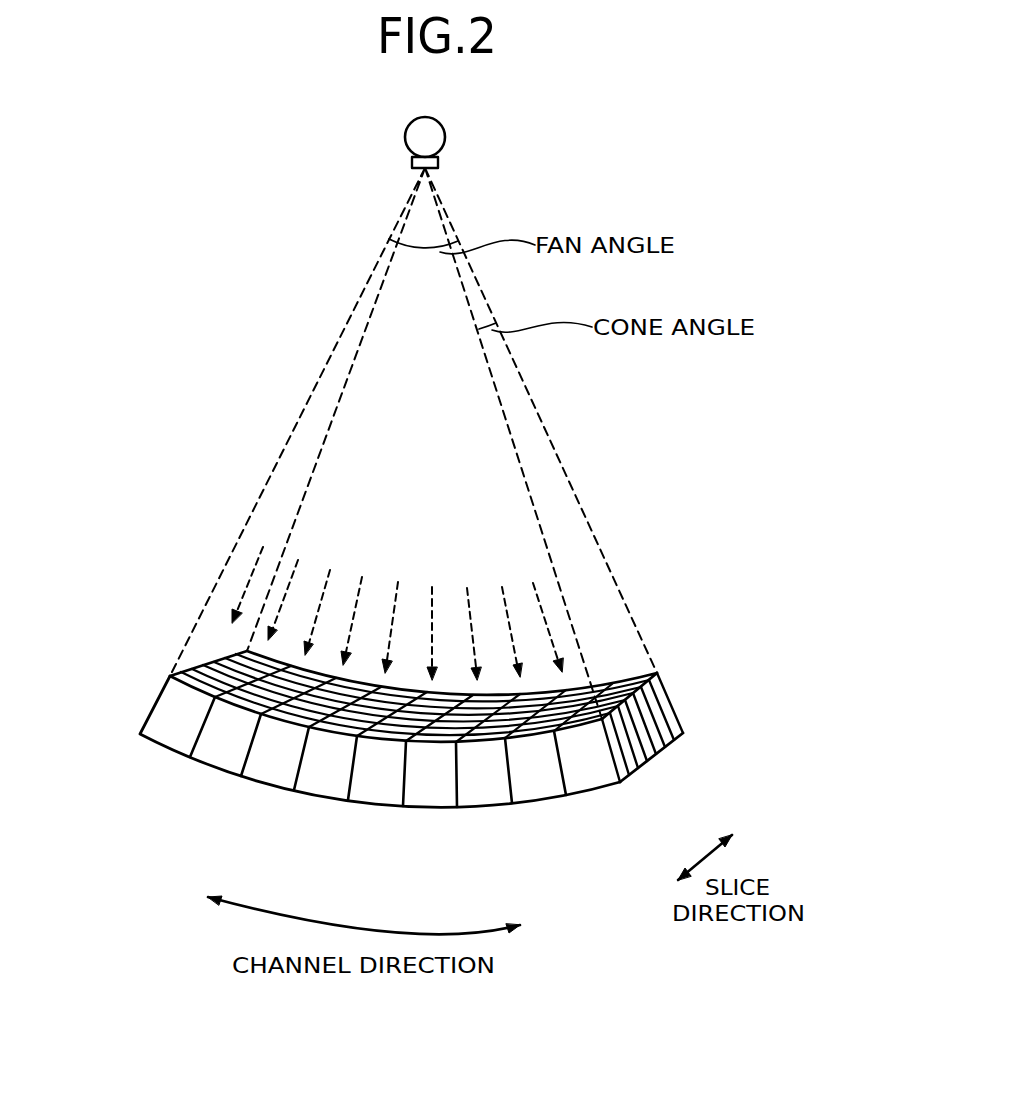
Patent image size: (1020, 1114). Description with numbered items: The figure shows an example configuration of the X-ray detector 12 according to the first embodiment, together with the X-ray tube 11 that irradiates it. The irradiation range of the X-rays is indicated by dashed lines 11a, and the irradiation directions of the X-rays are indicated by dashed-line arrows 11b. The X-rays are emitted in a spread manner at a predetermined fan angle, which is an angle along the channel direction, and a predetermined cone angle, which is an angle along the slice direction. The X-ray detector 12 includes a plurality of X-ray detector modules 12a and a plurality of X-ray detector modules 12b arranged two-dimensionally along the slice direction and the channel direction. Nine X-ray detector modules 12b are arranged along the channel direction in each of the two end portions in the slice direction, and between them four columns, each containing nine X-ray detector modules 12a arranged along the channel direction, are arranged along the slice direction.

The X-ray tube 11 is at (447, 138).
The dashed lines 11a is at (325, 367).
The dashed-line arrows 11b is at (325, 610).
The X-ray detector 12 is at (690, 685).
The X-ray detector modules 12a is at (633, 757).
The X-ray detector modules 12b is at (152, 707).